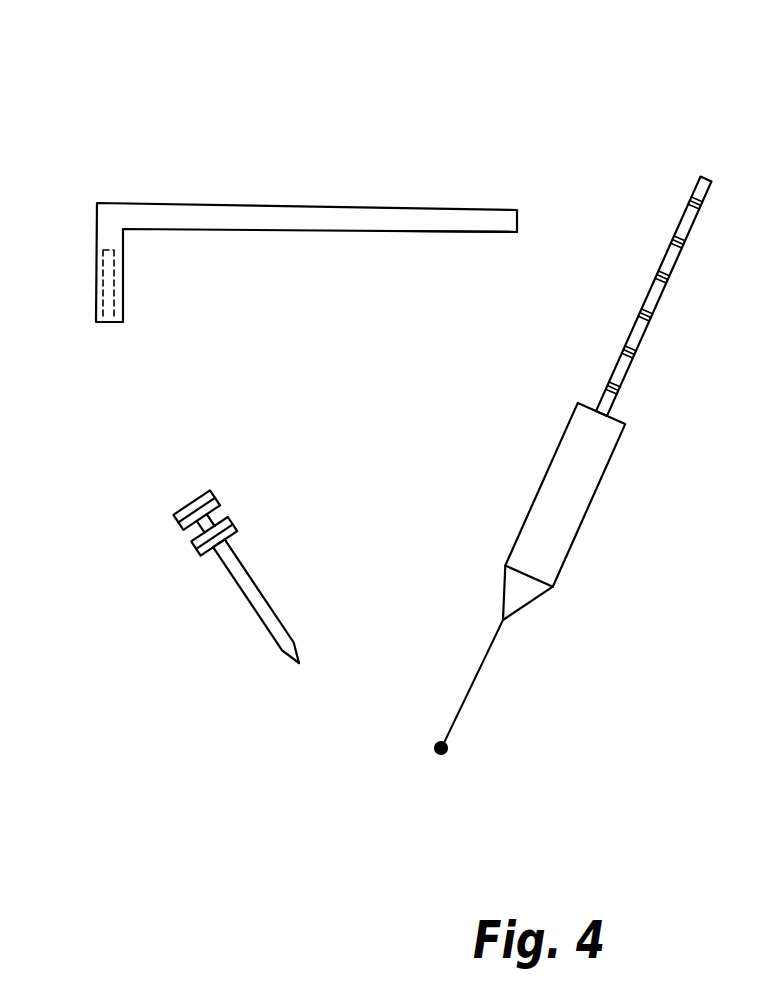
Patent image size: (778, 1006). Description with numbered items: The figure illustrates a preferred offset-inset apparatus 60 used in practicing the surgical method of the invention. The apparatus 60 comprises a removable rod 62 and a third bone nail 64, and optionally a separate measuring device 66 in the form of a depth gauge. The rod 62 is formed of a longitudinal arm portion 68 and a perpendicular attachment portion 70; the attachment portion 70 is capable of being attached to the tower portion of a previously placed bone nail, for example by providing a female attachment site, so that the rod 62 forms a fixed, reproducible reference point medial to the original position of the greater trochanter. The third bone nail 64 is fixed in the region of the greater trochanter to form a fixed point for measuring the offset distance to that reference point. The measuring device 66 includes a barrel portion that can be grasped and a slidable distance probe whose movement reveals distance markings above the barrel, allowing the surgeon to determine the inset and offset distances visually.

The offset-inset apparatus 60 is at (603, 127).
The removable rod 62 is at (255, 205).
The third bone nail 64 is at (262, 588).
The measuring device 66 is at (586, 465).
The longitudinal arm portion 68 is at (415, 232).
The perpendicular attachment portion 70 is at (95, 238).